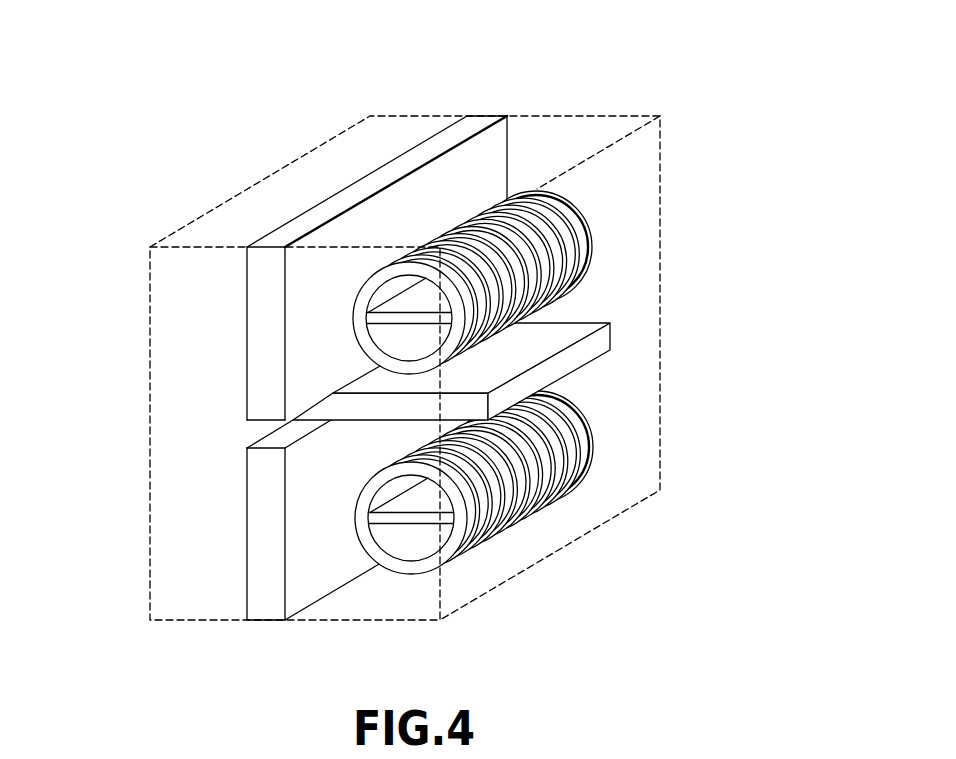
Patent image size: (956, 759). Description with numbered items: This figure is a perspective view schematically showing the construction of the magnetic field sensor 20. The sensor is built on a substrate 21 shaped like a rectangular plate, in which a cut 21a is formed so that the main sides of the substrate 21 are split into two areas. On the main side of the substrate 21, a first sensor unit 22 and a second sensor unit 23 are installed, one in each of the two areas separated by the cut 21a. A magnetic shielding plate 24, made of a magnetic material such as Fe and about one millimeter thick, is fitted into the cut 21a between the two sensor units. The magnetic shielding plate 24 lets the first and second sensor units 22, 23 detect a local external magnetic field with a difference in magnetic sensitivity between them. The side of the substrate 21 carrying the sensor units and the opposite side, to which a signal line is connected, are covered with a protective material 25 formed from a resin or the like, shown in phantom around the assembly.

The magnetic field sensor 20 is at (400, 310).
The substrate 21 is at (508, 148).
The cut 21a is at (282, 443).
The first sensor unit 22 is at (513, 522).
The second sensor unit 23 is at (477, 217).
The magnetic shielding plate 24 is at (580, 321).
The protective material 25 is at (265, 178).